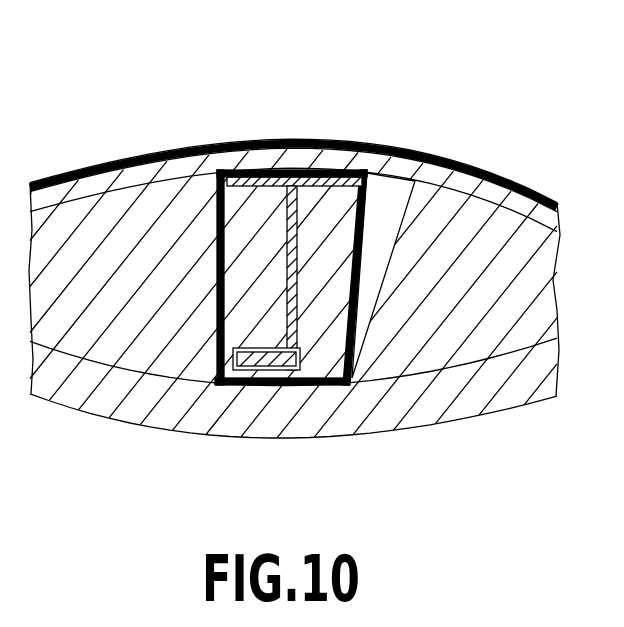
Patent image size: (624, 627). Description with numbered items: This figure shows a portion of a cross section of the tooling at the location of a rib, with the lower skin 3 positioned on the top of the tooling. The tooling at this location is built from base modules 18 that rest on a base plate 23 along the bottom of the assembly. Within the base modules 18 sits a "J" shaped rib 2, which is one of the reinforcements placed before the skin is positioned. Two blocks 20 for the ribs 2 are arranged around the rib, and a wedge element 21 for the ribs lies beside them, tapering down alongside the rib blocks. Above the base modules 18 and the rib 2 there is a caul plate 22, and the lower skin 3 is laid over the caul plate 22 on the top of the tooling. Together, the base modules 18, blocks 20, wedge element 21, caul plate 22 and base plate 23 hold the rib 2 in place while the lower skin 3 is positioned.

The rib 2 is at (320, 168).
The lower skin 3 is at (455, 168).
The base module 18 is at (158, 198).
The block 20 is at (243, 170).
The wedge element 21 is at (381, 190).
The caul plate 22 is at (513, 180).
The base plate 23 is at (103, 407).